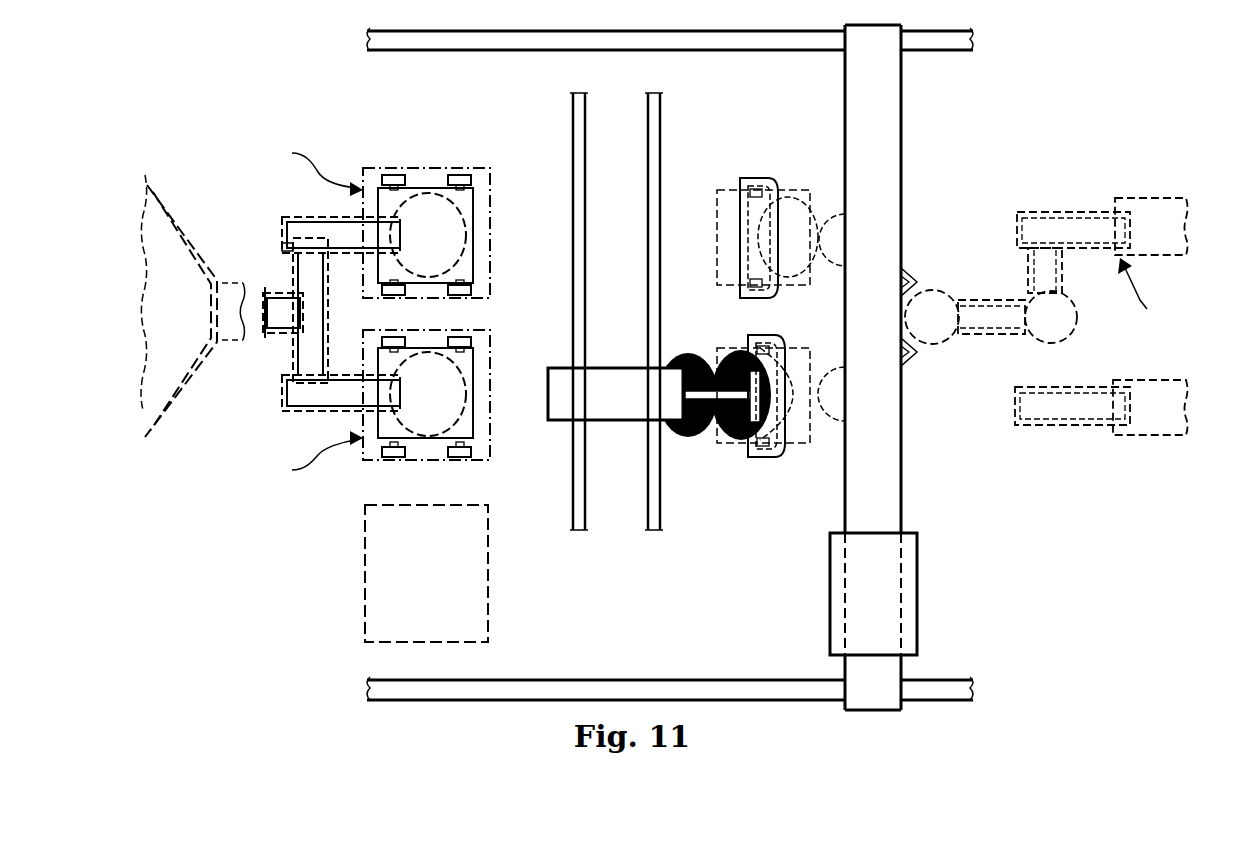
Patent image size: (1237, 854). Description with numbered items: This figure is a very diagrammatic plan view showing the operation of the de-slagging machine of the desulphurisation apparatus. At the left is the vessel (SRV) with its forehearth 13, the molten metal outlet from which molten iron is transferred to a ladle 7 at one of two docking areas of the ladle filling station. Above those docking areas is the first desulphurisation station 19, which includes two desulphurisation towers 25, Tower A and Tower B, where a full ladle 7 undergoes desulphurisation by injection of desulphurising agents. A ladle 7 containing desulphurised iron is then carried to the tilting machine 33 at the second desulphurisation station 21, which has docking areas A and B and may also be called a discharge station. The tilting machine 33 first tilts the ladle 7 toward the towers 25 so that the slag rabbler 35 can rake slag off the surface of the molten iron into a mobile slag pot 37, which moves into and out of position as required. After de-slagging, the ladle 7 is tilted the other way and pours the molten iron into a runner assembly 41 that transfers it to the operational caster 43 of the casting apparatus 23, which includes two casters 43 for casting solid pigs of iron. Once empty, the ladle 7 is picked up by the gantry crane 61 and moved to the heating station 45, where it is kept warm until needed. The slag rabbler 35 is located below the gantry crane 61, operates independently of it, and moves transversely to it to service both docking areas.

The ladle 7 is at (712, 432).
The forehearth 13 is at (227, 332).
The first desulphurisation station 19 is at (363, 276).
The second desulphurisation station 21 is at (758, 134).
The casting apparatus 23 is at (1069, 308).
The desulphurisation tower 25 is at (405, 325).
The tilting machine 33 is at (767, 459).
The slag rabbler 35 is at (610, 415).
The slag pot 37 is at (683, 437).
The runner assembly 41 is at (1035, 263).
The caster 43 is at (1153, 214).
The heating station 45 is at (483, 578).
The gantry crane 61 is at (855, 582).